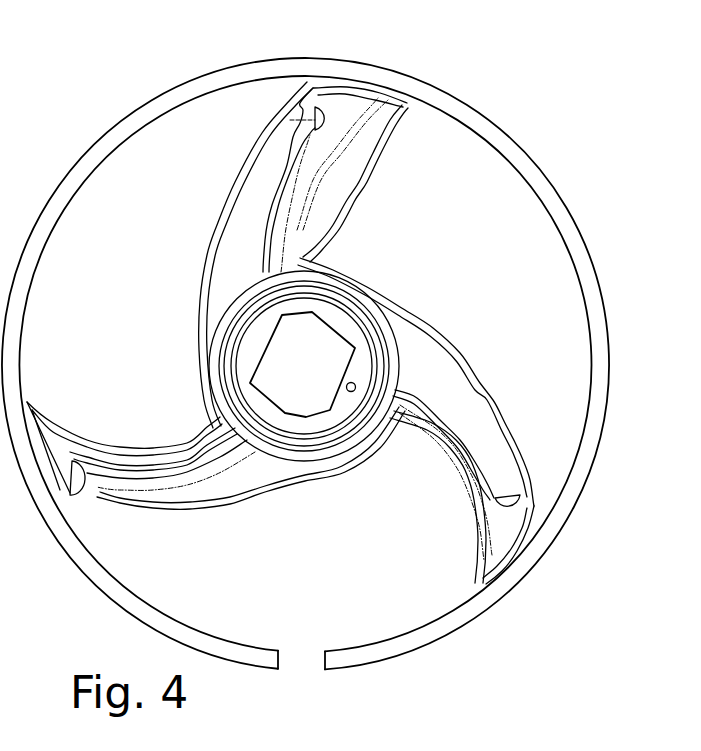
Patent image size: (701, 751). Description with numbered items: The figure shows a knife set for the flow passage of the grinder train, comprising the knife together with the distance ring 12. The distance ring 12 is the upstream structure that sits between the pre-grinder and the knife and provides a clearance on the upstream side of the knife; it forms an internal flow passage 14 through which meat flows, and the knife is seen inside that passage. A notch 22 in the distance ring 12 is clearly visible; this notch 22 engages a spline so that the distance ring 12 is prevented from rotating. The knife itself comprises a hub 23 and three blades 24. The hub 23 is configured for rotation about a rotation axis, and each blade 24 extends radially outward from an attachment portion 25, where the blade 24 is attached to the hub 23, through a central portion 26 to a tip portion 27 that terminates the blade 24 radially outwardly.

The distance ring 12 is at (493, 127).
The internal flow passage 14 is at (432, 330).
The notch 22 is at (302, 665).
The hub 23 is at (283, 438).
The blade 24 is at (228, 182).
The attachment portion 25 is at (232, 296).
The central portion 26 is at (242, 217).
The tip portion 27 is at (317, 105).